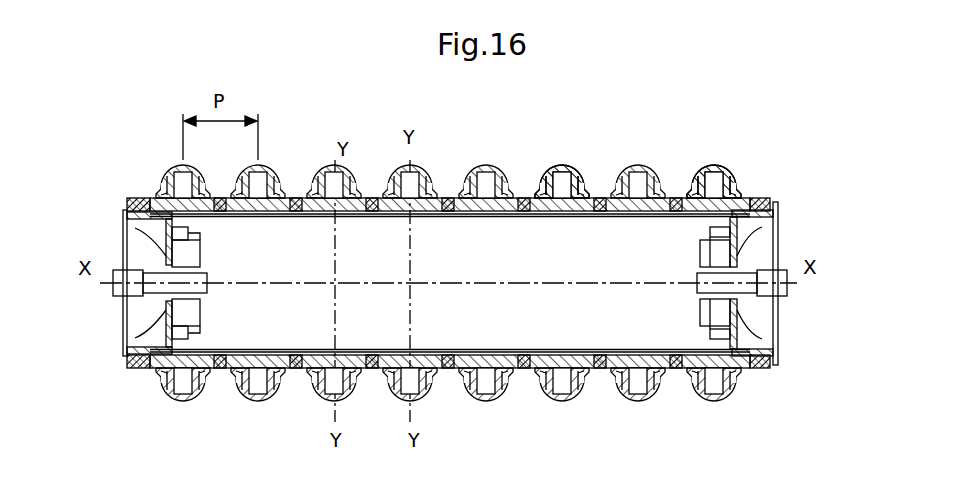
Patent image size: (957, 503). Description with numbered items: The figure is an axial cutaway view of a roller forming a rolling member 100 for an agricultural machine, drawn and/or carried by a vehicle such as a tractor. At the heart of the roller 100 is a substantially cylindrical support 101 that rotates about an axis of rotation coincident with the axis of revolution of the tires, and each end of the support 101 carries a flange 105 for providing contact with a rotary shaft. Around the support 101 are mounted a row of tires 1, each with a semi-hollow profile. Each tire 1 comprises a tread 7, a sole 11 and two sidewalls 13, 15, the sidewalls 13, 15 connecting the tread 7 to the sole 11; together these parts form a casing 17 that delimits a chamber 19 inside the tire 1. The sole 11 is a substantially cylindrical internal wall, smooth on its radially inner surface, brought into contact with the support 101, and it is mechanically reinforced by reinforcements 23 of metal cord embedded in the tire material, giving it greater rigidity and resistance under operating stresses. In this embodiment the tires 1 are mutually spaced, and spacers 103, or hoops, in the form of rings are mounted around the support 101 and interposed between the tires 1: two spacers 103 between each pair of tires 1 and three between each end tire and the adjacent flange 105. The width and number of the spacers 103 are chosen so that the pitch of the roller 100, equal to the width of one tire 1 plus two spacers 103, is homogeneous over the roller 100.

The rolling member 100 is at (286, 80).
The tire 1 is at (705, 154).
The tread 7 is at (568, 166).
The sidewall 13 is at (746, 180).
The spacer 103 is at (300, 197).
The reinforcements 23 is at (238, 214).
The sole 11 is at (490, 214).
The support 101 is at (560, 214).
The flange 105 is at (143, 315).
The casing 17 is at (262, 400).
The chamber 19 is at (640, 402).
The sidewall 15 is at (697, 389).